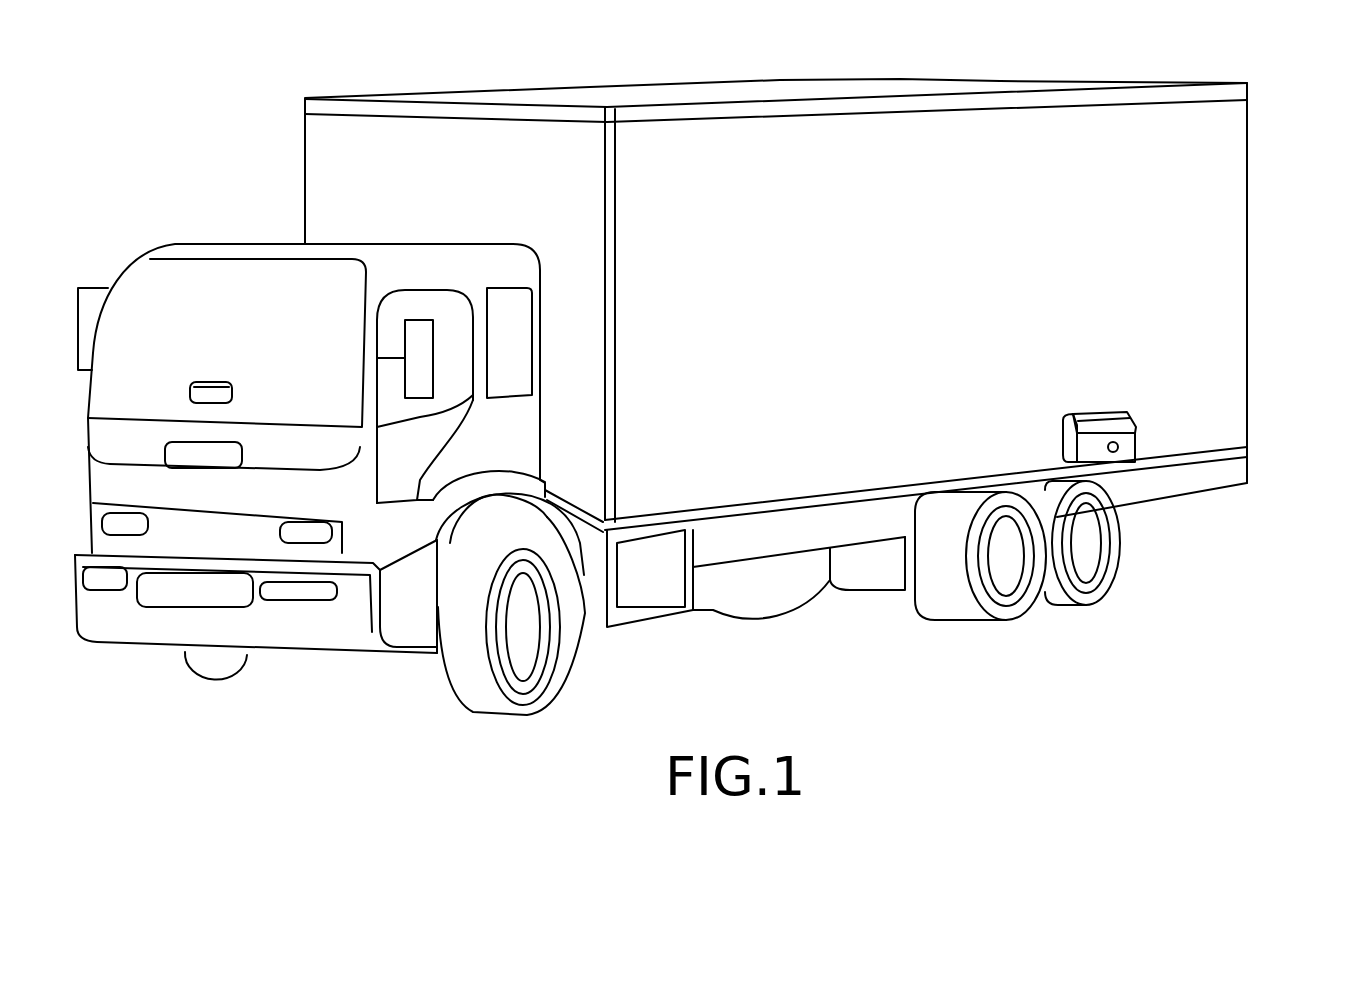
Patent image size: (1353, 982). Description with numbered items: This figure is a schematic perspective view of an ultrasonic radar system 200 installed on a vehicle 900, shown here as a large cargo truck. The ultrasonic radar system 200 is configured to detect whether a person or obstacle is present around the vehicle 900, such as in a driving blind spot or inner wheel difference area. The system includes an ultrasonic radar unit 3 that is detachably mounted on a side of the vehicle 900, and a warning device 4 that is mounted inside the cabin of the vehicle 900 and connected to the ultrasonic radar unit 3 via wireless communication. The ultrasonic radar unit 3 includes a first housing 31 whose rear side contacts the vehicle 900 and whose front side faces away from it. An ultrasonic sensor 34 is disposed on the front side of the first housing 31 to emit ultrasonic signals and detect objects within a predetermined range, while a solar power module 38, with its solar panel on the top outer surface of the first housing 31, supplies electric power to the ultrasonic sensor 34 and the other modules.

The vehicle 900 is at (236, 242).
The warning device 4 is at (212, 392).
The ultrasonic radar system 200 is at (1187, 417).
The ultrasonic radar unit 3 is at (1190, 391).
The first housing 31 is at (1083, 452).
The ultrasonic sensor 34 is at (1195, 487).
The solar power module 38 is at (1105, 412).